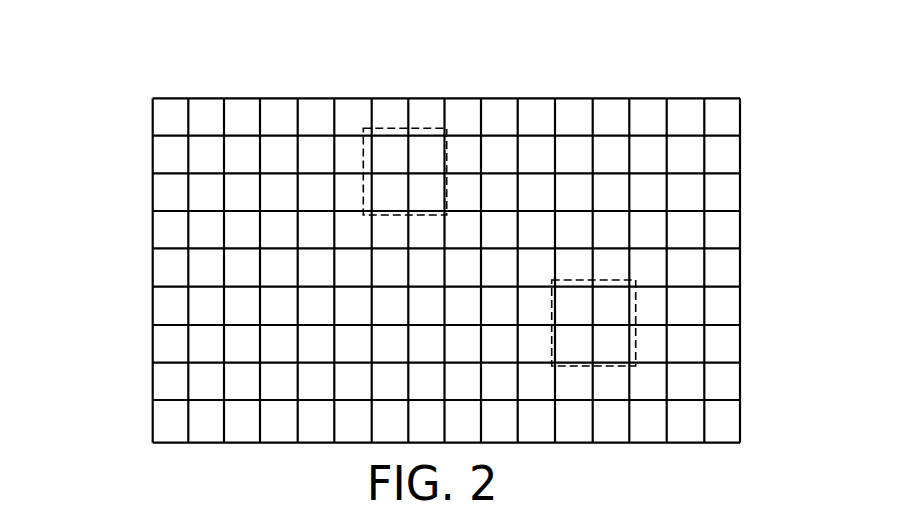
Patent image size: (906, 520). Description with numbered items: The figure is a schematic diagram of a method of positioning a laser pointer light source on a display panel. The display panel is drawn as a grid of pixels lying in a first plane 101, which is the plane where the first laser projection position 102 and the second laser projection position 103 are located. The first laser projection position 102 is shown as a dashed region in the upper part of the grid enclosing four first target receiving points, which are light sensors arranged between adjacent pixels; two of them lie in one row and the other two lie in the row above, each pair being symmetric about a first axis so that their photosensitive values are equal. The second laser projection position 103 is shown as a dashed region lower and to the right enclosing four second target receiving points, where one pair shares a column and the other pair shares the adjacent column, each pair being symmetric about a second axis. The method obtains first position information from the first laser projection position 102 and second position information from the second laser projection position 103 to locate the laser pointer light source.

The first plane 101 is at (152, 198).
The first laser projection position 102 is at (382, 128).
The second laser projection position 103 is at (636, 340).